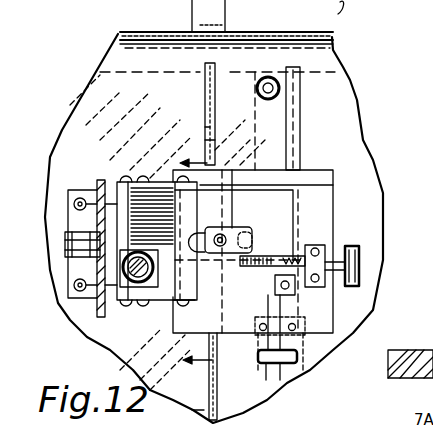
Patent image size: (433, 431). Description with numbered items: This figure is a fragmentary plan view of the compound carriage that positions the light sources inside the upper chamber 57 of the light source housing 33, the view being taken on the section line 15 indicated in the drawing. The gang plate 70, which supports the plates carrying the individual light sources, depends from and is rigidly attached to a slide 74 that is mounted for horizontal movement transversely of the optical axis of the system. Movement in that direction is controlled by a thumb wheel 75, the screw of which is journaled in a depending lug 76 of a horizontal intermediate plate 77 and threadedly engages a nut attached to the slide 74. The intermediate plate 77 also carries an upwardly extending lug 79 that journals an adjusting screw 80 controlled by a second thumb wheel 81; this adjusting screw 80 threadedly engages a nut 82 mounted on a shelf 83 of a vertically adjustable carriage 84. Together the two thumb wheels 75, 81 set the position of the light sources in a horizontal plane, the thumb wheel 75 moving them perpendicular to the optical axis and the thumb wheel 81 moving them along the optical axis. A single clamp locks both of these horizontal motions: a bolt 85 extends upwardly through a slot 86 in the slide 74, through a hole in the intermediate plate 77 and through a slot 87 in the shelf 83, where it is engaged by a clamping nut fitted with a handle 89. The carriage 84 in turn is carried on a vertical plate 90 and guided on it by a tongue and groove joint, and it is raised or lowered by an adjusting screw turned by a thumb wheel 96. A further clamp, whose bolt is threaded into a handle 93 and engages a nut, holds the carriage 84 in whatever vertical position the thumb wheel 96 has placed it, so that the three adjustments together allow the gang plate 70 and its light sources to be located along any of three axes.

The light source housing 33 is at (150, 32).
The upper chamber 57 is at (146, 82).
The gang plate 70 is at (214, 108).
The guide rail 15 is at (194, 155).
The shelf 83 is at (228, 193).
The vertically adjustable carriage 84 is at (163, 200).
The slide 74 is at (302, 193).
The slot 87 is at (195, 233).
The bolt 85 is at (226, 236).
The handle 89 is at (249, 230).
The upwardly extending lug 79 is at (320, 243).
The thumb wheel 81 is at (352, 247).
The vertical plate 90 is at (110, 222).
The handle 93 is at (70, 253).
The nut 82 is at (278, 268).
The adjusting screw 80 is at (296, 314).
The horizontal intermediate plate 77 is at (323, 325).
The thumb wheel 96 is at (128, 303).
The slot 86 is at (210, 304).
The depending lug 76 is at (305, 336).
The thumb wheel 75 is at (262, 356).